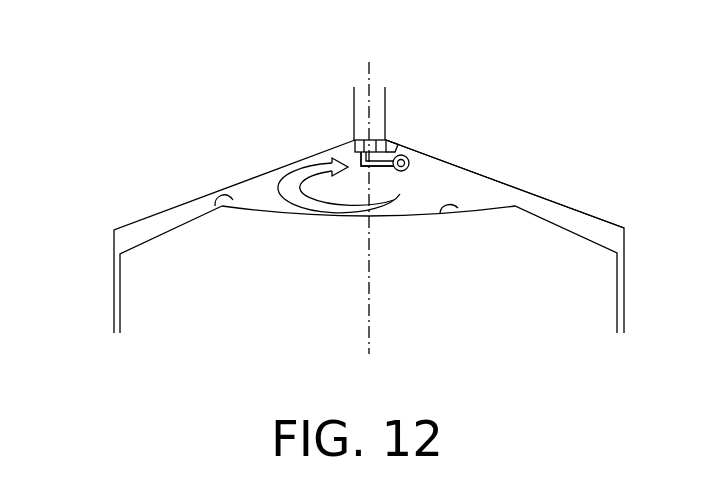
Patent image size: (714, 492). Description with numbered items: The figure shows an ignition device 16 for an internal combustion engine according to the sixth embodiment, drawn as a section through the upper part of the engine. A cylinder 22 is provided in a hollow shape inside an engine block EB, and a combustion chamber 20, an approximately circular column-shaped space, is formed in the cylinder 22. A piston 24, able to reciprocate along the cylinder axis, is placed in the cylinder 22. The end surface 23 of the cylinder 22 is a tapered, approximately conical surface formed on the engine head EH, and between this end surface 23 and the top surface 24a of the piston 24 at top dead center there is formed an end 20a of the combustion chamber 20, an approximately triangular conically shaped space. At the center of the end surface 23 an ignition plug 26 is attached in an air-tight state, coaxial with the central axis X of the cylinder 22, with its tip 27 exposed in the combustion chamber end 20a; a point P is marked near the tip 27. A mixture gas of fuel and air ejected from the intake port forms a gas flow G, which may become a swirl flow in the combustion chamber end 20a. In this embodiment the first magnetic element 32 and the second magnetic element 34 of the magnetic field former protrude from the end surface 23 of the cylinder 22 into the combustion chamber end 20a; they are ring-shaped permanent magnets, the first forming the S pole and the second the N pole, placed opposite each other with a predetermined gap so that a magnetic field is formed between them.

The ignition device 16 is at (181, 97).
The combustion chamber 20 is at (148, 233).
The end of the combustion chamber 20a is at (481, 174).
The cylinder 22 is at (118, 250).
The end surface of the cylinder 23 is at (215, 206).
The piston 24 is at (457, 337).
The top surface of the piston 24a is at (457, 211).
The ignition plug 26 is at (351, 120).
The tip of the ignition plug 27 is at (342, 140).
The first magnetic element 32 is at (462, 190).
The second magnetic element 34 is at (462, 190).
The point P is at (383, 151).
The central axis X is at (372, 76).
The gas flow G is at (289, 206).
The engine head EH is at (252, 166).
The engine block EB is at (76, 315).